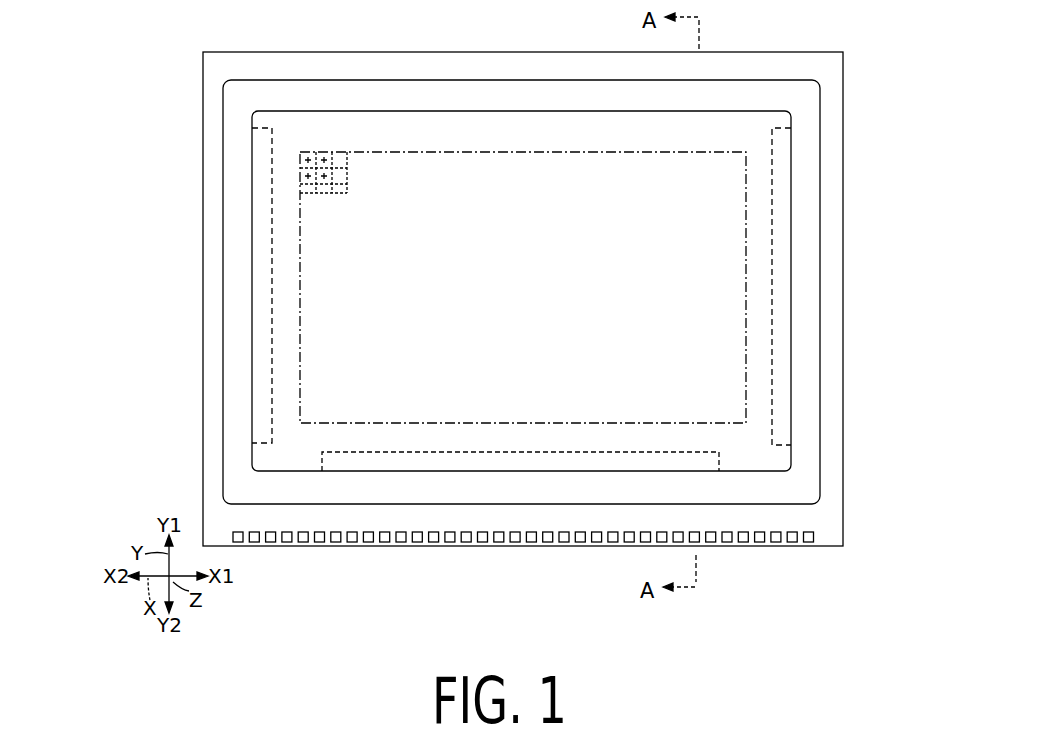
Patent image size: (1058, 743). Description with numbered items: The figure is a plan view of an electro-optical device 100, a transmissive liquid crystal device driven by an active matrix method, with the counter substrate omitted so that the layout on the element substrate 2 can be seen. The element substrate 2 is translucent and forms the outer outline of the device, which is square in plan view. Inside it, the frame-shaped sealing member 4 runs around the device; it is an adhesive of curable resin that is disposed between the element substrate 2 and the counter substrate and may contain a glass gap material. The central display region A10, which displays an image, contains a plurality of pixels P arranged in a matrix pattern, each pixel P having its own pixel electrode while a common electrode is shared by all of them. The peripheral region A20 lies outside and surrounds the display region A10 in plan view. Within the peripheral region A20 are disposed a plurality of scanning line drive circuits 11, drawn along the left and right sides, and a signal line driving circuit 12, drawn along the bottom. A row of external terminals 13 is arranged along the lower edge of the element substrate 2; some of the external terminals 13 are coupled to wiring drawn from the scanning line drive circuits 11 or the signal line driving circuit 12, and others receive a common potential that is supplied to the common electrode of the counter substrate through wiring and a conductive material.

The electro-optical device 100 is at (792, 48).
The element substrate 2 is at (843, 88).
The sealing member 4 is at (815, 168).
The scanning line drive circuit 11 is at (273, 128).
The signal line driving circuit 12 is at (725, 459).
The external terminal 13 is at (493, 542).
The pixel P is at (347, 184).
The display region A10 is at (746, 323).
The peripheral region A20 is at (708, 357).